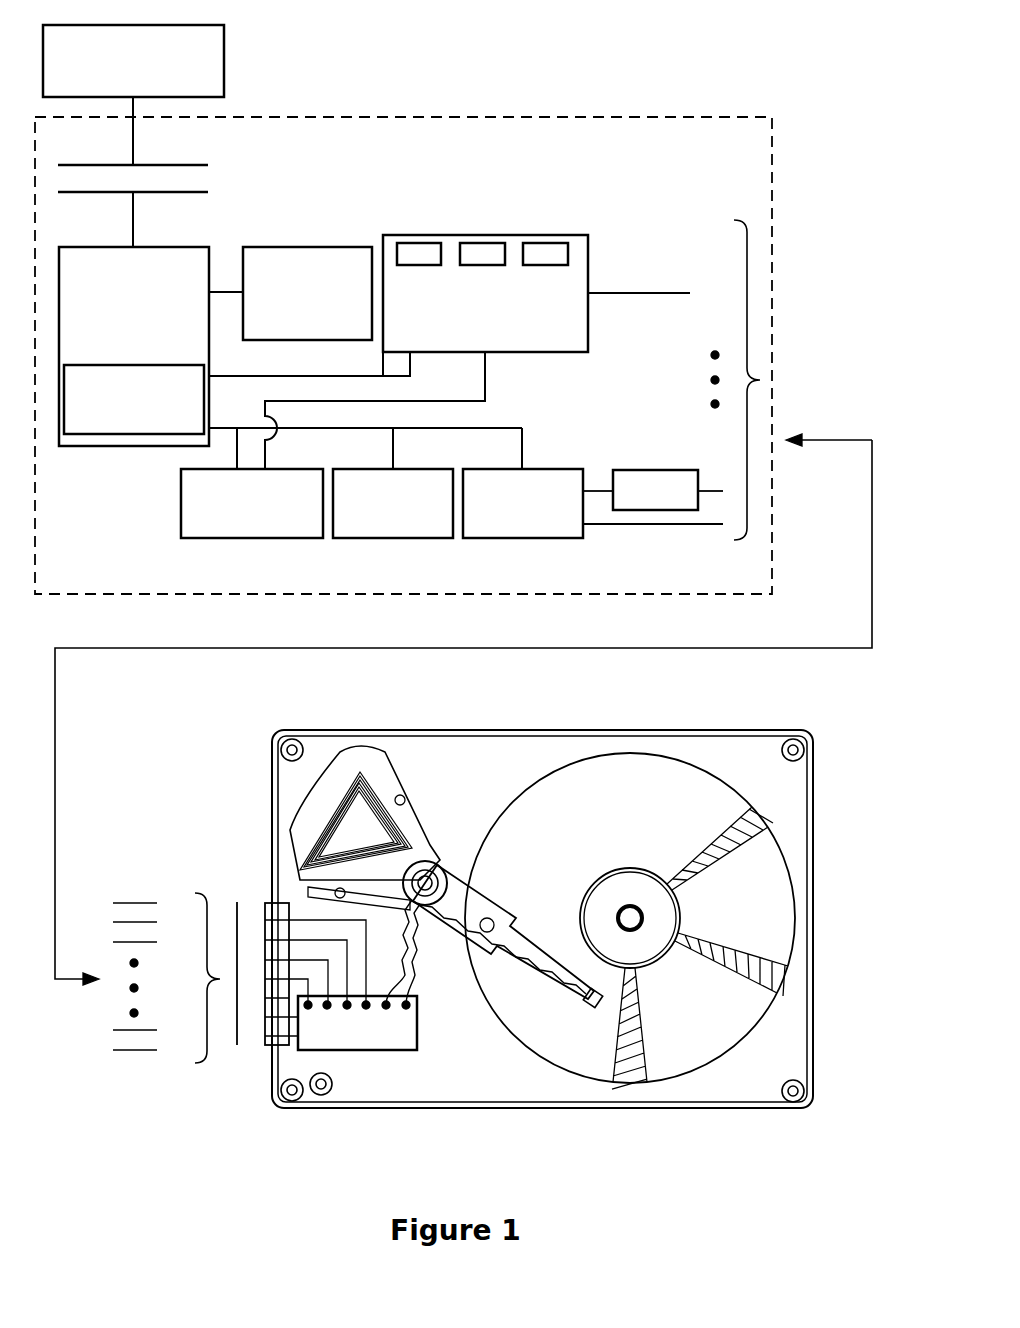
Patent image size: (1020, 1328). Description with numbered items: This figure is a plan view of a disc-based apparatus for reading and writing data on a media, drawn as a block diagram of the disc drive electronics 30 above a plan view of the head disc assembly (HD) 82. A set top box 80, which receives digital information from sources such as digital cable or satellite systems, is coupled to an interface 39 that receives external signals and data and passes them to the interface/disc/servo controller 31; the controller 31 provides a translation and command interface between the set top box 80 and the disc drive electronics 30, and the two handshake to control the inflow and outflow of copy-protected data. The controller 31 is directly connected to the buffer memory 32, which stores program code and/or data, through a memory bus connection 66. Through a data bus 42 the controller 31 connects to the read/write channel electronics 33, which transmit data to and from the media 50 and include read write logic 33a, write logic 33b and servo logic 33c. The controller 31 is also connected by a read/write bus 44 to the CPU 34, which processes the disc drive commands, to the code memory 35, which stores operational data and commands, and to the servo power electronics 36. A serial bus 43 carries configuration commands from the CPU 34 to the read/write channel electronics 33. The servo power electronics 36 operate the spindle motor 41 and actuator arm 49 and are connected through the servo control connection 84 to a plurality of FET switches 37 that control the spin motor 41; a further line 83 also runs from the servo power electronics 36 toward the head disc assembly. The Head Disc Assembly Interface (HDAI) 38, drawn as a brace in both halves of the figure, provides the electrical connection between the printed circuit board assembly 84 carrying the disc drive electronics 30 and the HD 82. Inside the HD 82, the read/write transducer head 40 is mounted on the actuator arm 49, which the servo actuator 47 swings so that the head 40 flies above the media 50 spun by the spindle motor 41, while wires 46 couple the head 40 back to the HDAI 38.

The set top box 80 is at (214, 46).
The disc drive electronics 30 is at (626, 165).
The interface 39 is at (210, 172).
The interface/disc/servo controller 31 is at (143, 247).
The memory bus connection 66 is at (230, 292).
The buffer memory 32 is at (305, 247).
The read/write channel electronics 33 is at (509, 247).
The read write logic 33a is at (427, 243).
The write logic 33b is at (487, 243).
The servo logic 33c is at (548, 243).
The data bus 42 is at (300, 376).
The serial bus 43 is at (395, 401).
The read/write bus 44 is at (522, 448).
The CPU 34 is at (206, 540).
The code memory 35 is at (416, 540).
The servo power electronics 36 is at (536, 540).
The FET switches 37 is at (672, 470).
The servo control connection / printed circuit board assembly (PCBA) 84 is at (723, 491).
The servo power output line 83 is at (625, 524).
The Head Disc Assembly Interface (HDAI) 38 is at (488, 689).
The head disc assembly (HD) 82 is at (708, 703).
The media 50 is at (673, 817).
The spindle motor 41 is at (640, 918).
The servo actuator 47 is at (332, 775).
The actuator arm 49 is at (463, 878).
The read/write transducer head 40 is at (590, 1006).
The wires 46 is at (437, 905).